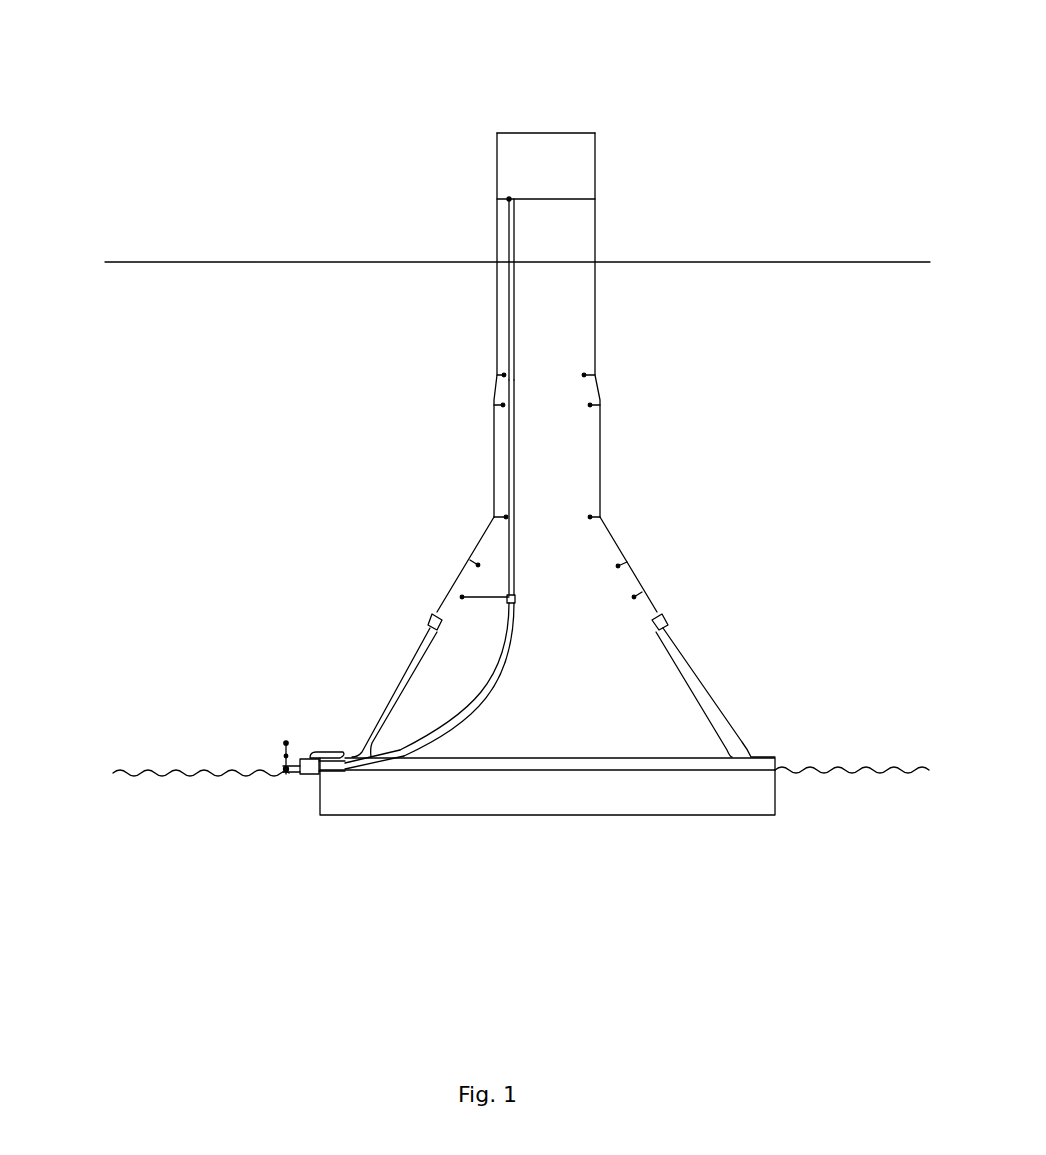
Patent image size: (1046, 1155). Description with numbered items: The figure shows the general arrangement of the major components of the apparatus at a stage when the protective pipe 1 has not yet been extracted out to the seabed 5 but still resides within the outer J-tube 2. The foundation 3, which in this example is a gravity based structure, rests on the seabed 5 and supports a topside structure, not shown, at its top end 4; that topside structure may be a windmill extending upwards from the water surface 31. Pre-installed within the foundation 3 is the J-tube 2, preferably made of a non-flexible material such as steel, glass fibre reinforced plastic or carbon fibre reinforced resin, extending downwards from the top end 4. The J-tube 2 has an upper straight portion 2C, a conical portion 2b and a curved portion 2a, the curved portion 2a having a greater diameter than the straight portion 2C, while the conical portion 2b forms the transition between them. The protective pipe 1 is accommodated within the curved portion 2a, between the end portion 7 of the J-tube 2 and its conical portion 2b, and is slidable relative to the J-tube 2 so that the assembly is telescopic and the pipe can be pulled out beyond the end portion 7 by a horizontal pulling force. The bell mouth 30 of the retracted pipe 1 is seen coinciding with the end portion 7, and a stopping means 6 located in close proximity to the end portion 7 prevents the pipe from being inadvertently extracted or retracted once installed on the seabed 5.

The protective pipe 1 is at (450, 718).
The J-tube 2 is at (516, 542).
The curved portion 2a is at (477, 700).
The conical portion 2b is at (462, 597).
The upper straight portion 2C is at (516, 345).
The foundation 3 is at (640, 570).
The top end 4 is at (544, 120).
The seabed 5 is at (195, 772).
The stopping means 6 is at (335, 772).
The end portion 7 is at (294, 776).
The bell mouth 30 is at (286, 772).
The water surface 31 is at (645, 260).